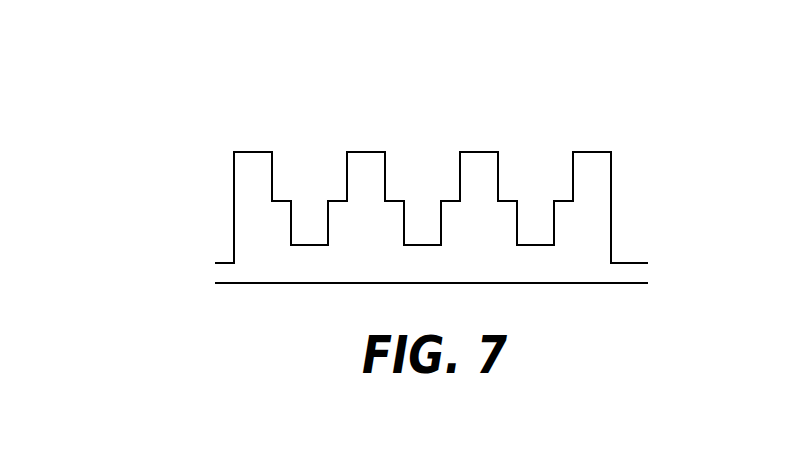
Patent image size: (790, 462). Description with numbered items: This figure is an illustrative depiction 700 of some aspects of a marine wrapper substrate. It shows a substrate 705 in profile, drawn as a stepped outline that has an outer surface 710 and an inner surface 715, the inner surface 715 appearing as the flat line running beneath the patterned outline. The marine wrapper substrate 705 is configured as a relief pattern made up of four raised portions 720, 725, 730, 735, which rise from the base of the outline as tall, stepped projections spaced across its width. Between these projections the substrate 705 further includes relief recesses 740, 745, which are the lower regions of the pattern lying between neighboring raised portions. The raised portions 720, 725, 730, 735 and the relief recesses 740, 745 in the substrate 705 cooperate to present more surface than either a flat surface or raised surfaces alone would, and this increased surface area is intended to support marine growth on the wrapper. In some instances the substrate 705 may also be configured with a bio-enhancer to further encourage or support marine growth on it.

The illustrative depiction 700 is at (124, 42).
The substrate 705 is at (206, 224).
The outer surface 710 is at (632, 260).
The inner surface 715 is at (623, 284).
The raised portion 720 is at (258, 150).
The raised portion 725 is at (357, 150).
The raised portion 730 is at (495, 150).
The raised portion 735 is at (603, 150).
The relief recess 740 is at (309, 213).
The relief recess 745 is at (539, 213).